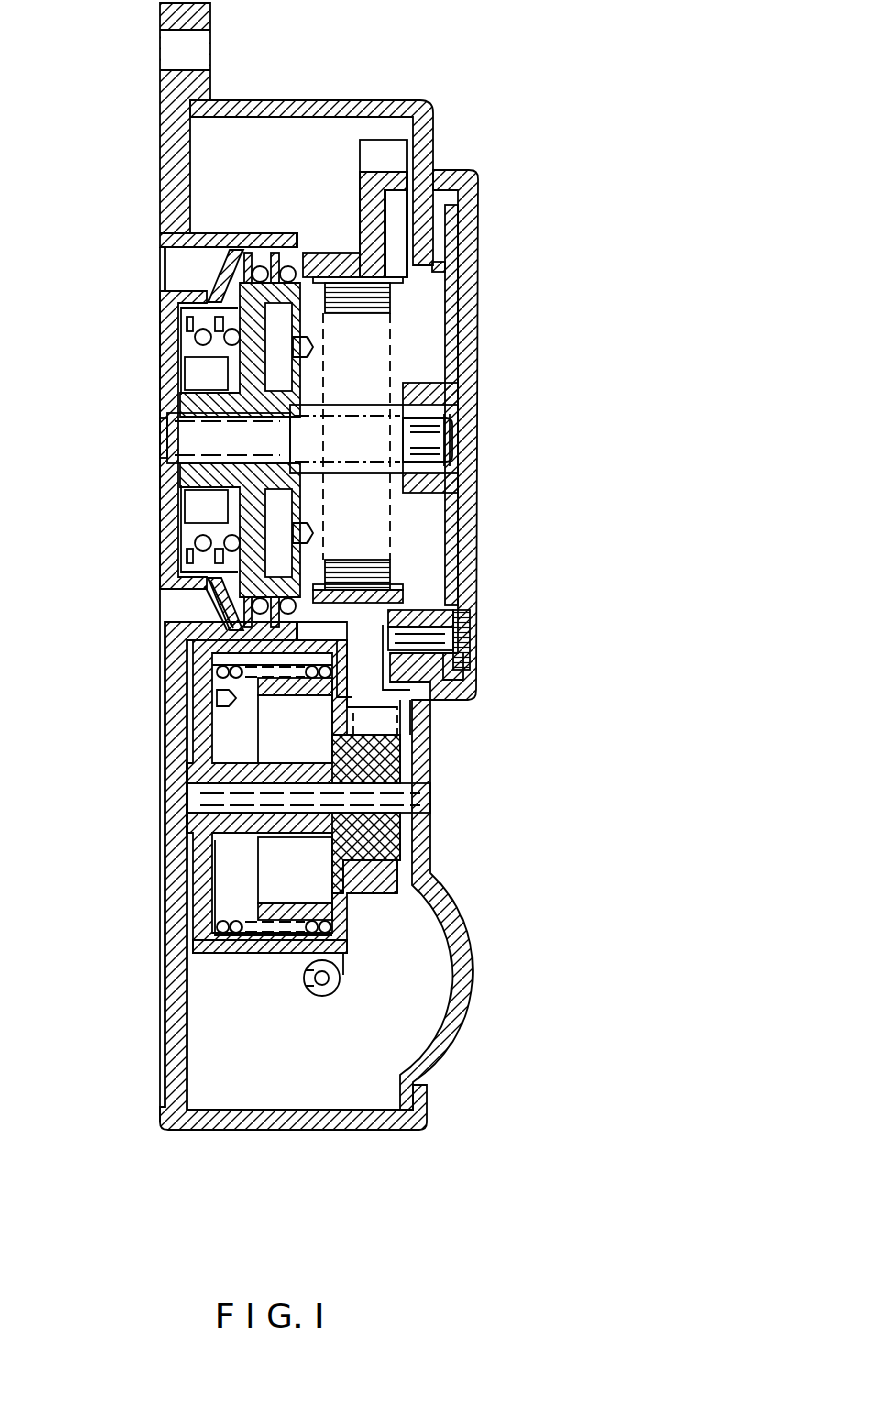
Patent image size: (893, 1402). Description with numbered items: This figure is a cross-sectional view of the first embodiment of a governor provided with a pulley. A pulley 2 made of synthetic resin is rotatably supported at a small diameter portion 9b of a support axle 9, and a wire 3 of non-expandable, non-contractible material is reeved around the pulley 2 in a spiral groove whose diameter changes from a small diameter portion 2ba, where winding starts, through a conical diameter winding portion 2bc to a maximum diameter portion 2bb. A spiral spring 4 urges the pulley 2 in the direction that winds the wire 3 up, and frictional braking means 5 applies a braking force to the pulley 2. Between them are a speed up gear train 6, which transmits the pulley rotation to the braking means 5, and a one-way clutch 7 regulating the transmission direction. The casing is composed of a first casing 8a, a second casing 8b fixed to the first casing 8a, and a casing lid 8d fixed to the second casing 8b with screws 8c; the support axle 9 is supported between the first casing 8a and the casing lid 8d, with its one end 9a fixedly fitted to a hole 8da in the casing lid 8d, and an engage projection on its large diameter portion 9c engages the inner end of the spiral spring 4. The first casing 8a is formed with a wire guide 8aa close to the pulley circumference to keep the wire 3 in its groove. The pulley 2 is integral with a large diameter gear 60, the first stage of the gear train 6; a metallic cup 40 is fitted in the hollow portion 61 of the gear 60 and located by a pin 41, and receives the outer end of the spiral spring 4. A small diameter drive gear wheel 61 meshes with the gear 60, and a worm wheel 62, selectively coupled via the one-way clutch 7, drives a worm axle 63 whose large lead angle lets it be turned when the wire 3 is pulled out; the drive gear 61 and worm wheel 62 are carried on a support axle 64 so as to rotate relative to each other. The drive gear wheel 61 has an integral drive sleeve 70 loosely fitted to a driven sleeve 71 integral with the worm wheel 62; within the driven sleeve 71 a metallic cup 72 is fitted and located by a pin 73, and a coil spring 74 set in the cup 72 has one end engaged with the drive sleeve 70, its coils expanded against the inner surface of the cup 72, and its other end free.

The pulley 2 is at (315, 265).
The small diameter portion 2ba is at (182, 330).
The maximum diameter portion 2bb is at (225, 600).
The conical diameter winding portion 2bc is at (215, 278).
The wire 3 is at (262, 262).
The spiral spring 4 is at (370, 300).
The frictional braking means 5 is at (233, 1021).
The speed up gear train 6 is at (443, 708).
The one-way clutch 7 is at (245, 851).
The first casing 8a is at (178, 185).
The wire guide 8aa is at (218, 258).
The second casing 8b is at (415, 107).
The screws 8c is at (462, 628).
The casing lid 8d is at (478, 340).
The boss 8da is at (445, 392).
The support axle 9 is at (373, 478).
The one end of the support axle 9a is at (435, 440).
The small diameter portion of the support axle 9b is at (200, 440).
The large diameter portion of the support axle 9c is at (440, 480).
The metallic cup 40 is at (452, 287).
The pin 41 is at (308, 533).
The large diameter gear 60 is at (380, 150).
The small diameter drive gear wheel 61 is at (378, 258).
The worm wheel 62 is at (340, 962).
The worm axle 63 is at (335, 992).
The support axle 64 is at (200, 800).
The drive sleeve 70 is at (295, 690).
The driven sleeve 71 is at (275, 960).
The metallic cup 72 is at (223, 888).
The pin 73 is at (217, 698).
The coil spring 74 is at (227, 940).